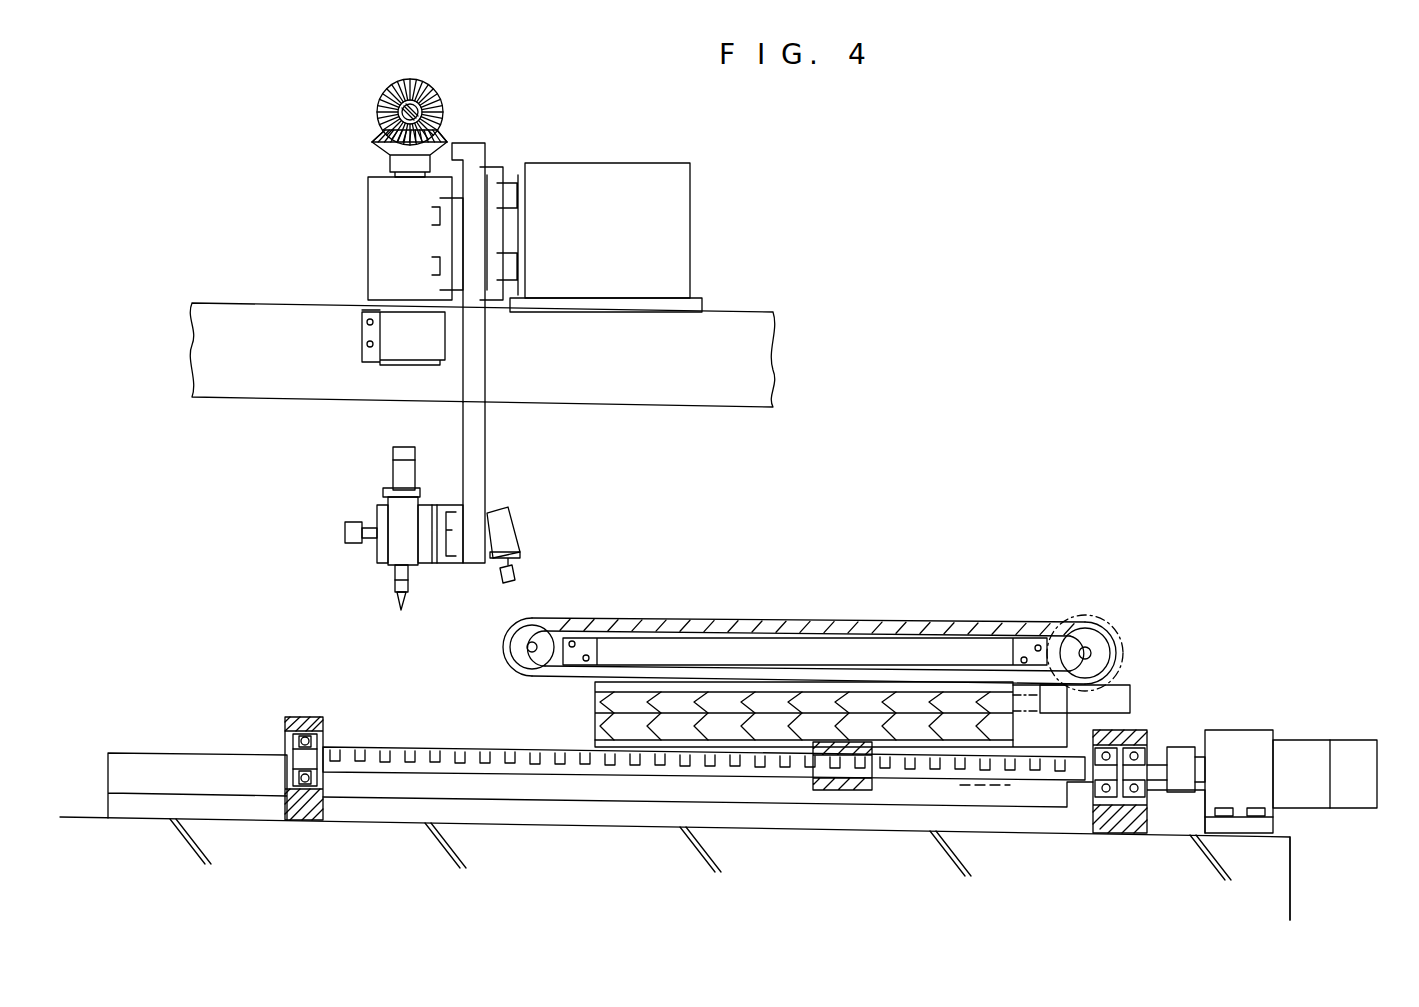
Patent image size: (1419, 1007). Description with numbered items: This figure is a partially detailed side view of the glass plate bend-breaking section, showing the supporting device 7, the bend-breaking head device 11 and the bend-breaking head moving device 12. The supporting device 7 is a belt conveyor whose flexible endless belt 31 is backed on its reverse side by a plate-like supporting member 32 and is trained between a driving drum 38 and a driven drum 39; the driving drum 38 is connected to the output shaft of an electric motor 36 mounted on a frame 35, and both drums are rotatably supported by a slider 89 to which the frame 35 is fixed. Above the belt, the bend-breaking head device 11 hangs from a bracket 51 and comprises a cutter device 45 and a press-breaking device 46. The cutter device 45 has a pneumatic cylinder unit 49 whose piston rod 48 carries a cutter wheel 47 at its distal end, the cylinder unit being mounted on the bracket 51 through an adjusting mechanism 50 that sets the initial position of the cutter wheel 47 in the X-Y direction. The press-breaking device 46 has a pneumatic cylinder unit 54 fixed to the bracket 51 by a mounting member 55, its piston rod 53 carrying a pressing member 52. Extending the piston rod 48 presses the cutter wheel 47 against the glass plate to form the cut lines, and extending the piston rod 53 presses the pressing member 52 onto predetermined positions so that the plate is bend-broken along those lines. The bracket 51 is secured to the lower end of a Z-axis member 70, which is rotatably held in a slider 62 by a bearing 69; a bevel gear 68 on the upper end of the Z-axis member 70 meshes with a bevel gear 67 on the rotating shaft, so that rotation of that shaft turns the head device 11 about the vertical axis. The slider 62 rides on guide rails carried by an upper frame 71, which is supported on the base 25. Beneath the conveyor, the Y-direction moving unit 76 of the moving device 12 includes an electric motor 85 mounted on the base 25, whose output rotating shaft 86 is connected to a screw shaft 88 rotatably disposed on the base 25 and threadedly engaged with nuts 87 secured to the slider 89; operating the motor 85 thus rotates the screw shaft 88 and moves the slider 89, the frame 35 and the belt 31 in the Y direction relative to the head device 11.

The supporting device 7 is at (1109, 600).
The bend-breaking head device 11 is at (428, 538).
The bend-breaking head moving device 12 is at (1305, 716).
The base 25 is at (1290, 845).
The endless belt 31 is at (808, 612).
The plate-like supporting member 32 is at (873, 636).
The frame 35 is at (1130, 702).
The electric motor 36 is at (1122, 645).
The driving drum 38 is at (1082, 645).
The driven drum 39 is at (508, 648).
The cutter device 45 is at (345, 537).
The press-breaking device 46 is at (536, 531).
The cutter wheel 47 is at (398, 605).
The piston rod 48 is at (395, 578).
The pneumatic cylinder unit 49 is at (392, 505).
The adjusting mechanism 50 is at (445, 565).
The bracket 51 is at (485, 422).
The pressing member 52 is at (515, 580).
The piston rod 53 is at (516, 574).
The pneumatic cylinder unit 54 is at (500, 515).
The mounting member 55 is at (520, 556).
The slider 62 is at (487, 150).
The bevel gear 67 is at (443, 98).
The bevel gear 68 is at (385, 135).
The bearing 69 is at (378, 215).
The Z-axis member 70 is at (400, 307).
The upper frame 71 is at (690, 180).
The Y-direction moving unit 76 is at (1356, 716).
The electric motor 85 is at (1255, 735).
The output rotating shaft 86 is at (1198, 750).
The nuts 87 is at (850, 790).
The screw shaft 88 is at (483, 747).
The slider 89 is at (595, 702).